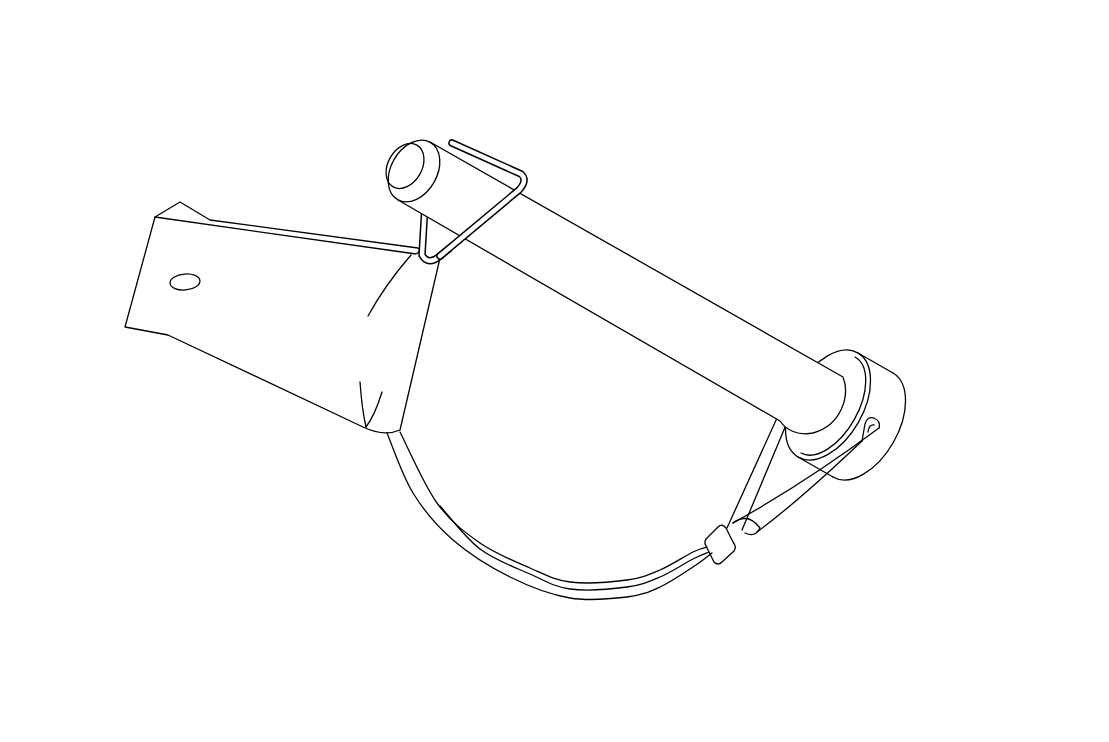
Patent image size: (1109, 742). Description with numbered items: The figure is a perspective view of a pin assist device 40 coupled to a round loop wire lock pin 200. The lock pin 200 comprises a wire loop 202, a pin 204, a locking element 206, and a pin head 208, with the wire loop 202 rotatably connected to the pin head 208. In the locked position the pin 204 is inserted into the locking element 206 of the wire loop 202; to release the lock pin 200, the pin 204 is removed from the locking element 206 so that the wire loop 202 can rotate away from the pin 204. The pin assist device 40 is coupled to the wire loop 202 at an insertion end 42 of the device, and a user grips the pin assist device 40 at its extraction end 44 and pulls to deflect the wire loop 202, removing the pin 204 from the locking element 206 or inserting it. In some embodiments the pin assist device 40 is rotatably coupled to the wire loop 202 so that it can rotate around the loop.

The round loop wire lock pin 200 is at (247, 153).
The pin assist device 40 is at (238, 388).
The insertion end 42 is at (363, 427).
The extraction end 44 is at (162, 252).
The wire loop 202 is at (477, 557).
The pin 204 is at (663, 310).
The locking element 206 is at (483, 158).
The pin head 208 is at (890, 400).